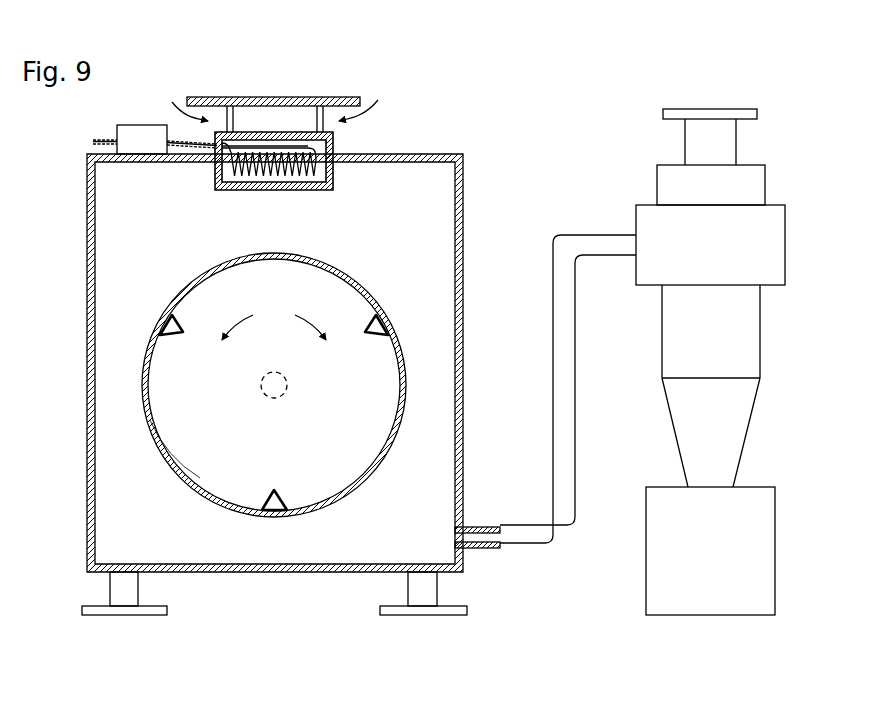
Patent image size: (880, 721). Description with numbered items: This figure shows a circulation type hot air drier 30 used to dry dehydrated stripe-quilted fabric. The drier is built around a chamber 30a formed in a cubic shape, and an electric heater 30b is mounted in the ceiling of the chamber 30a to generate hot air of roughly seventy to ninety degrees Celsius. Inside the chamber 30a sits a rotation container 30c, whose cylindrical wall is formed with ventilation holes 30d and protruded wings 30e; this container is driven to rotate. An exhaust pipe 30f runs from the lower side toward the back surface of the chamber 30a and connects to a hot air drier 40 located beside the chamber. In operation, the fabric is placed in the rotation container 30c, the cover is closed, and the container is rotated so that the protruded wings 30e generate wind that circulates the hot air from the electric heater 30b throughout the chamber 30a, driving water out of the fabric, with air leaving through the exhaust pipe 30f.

The circulation type hot air drier 30 is at (304, 393).
The chamber 30a is at (463, 187).
The electric heater 30b is at (318, 163).
The rotation container 30c is at (357, 488).
The ventilation holes 30d is at (185, 478).
The protruded wings 30e is at (258, 497).
The exhaust pipe 30f is at (486, 540).
The hot air drier 40 is at (745, 338).